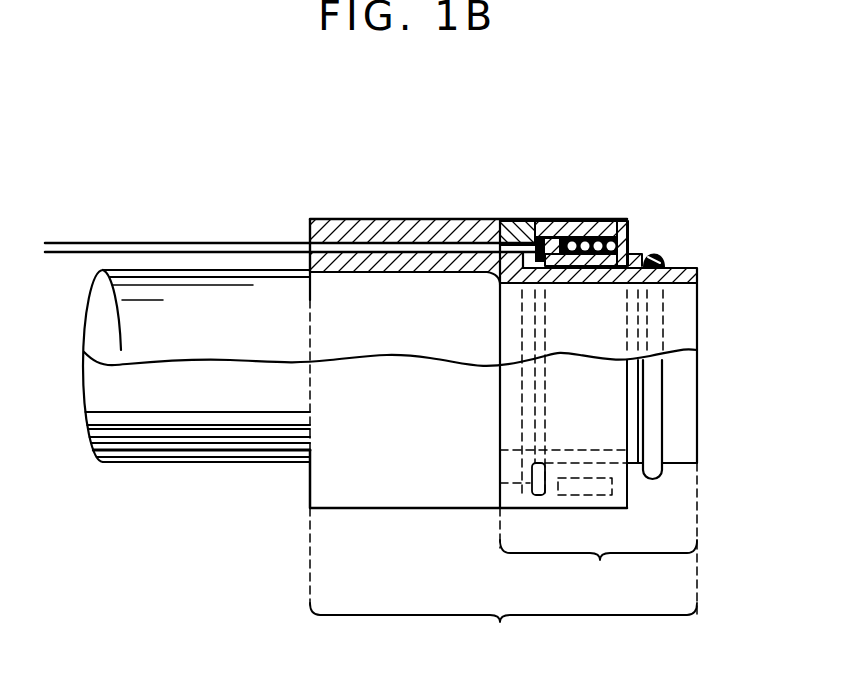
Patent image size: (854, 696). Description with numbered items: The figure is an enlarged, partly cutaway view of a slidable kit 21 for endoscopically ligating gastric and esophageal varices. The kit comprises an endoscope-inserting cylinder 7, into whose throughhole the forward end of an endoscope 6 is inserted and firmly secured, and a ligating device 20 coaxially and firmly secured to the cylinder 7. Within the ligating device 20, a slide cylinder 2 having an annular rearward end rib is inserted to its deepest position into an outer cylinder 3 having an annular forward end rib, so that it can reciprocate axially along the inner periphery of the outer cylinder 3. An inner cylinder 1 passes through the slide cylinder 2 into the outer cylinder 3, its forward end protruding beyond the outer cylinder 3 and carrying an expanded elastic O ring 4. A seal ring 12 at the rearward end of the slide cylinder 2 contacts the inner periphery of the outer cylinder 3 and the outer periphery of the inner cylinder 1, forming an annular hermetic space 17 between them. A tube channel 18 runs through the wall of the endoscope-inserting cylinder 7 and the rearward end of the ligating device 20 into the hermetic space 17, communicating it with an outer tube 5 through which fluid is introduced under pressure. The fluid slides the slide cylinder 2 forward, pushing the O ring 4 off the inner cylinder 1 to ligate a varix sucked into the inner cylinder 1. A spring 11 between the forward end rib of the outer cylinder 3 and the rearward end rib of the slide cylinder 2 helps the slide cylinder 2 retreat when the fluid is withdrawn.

The inner cylinder 1 is at (683, 266).
The slide cylinder 2 is at (642, 247).
The outer cylinder 3 is at (625, 225).
The elastic O ring 4 is at (653, 480).
The outer tube 5 is at (95, 243).
The endoscope 6 is at (138, 440).
The endoscope-inserting cylinder 7 is at (423, 508).
The spring 11 is at (572, 235).
The seal ring 12 is at (535, 235).
The annular hermetic space 17 is at (502, 227).
The tube channel 18 is at (363, 225).
The ligating device 20 is at (628, 605).
The slidable kit 21 is at (522, 667).